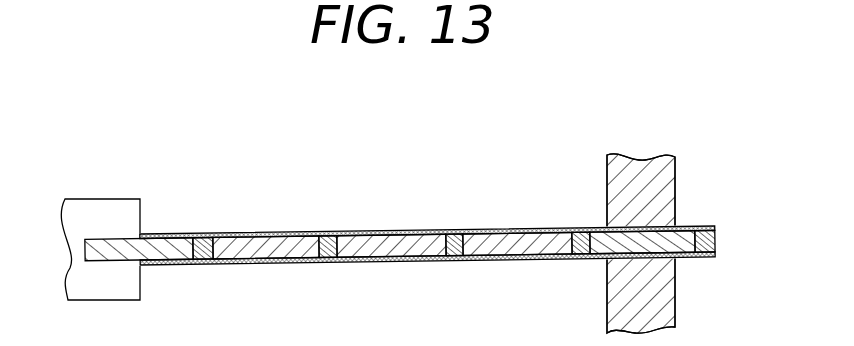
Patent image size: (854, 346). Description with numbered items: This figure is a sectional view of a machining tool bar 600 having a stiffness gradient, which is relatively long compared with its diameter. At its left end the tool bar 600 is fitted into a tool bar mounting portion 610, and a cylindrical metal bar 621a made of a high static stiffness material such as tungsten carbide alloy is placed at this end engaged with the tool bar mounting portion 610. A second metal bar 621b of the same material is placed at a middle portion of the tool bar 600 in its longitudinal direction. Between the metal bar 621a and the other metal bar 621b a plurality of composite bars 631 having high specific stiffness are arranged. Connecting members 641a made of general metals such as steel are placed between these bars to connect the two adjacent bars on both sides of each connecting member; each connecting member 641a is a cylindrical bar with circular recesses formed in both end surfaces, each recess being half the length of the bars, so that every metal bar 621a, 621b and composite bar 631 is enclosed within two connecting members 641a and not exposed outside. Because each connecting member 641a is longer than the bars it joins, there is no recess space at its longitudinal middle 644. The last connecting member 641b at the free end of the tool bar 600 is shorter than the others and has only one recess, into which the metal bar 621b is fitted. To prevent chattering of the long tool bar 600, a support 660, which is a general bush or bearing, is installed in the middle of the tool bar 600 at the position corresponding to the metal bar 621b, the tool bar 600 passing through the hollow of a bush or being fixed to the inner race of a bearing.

The tool bar 600 is at (386, 132).
The tool bar mounting portion 610 is at (128, 205).
The longitudinal middle of the connecting member 644 is at (201, 232).
The connecting members 641a is at (247, 226).
The last connecting member 641b is at (702, 227).
The metal bar 621a is at (153, 263).
The metal bar 621b is at (598, 250).
The composite bars 631 is at (247, 250).
The support 660 is at (673, 293).